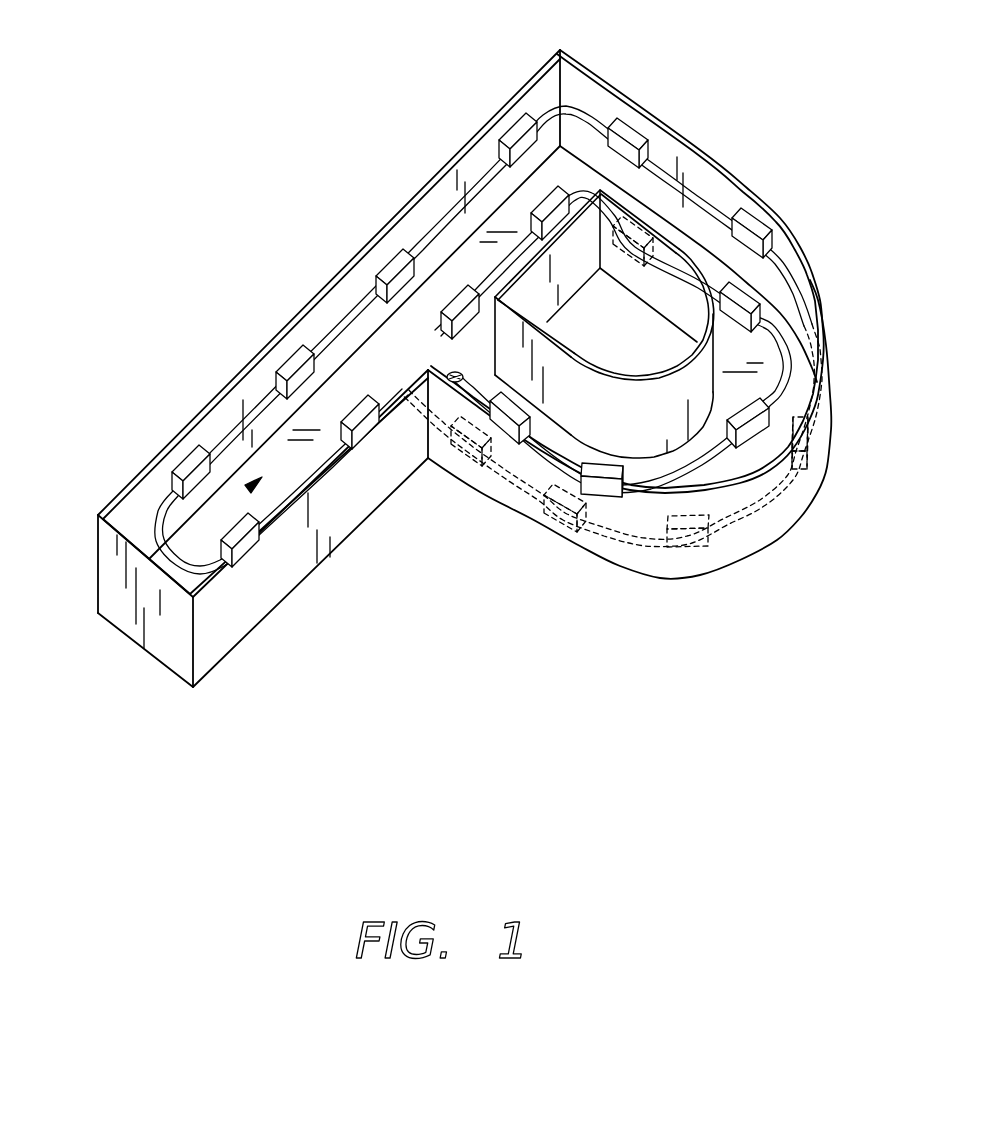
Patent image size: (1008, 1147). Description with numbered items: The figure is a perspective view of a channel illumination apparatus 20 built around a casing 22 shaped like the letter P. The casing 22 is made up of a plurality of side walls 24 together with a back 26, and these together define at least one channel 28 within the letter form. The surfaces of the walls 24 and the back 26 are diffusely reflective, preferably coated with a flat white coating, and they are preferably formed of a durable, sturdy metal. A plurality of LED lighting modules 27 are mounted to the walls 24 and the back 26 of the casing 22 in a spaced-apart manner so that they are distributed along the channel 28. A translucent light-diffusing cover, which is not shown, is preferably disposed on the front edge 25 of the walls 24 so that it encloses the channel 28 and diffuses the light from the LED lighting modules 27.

The channel illumination apparatus 20 is at (222, 193).
The casing 22 is at (513, 88).
The side walls 24 is at (227, 413).
The front edge 25 is at (417, 195).
The back 26 is at (287, 450).
The LED lighting modules 27 is at (745, 420).
The channel 28 is at (245, 490).